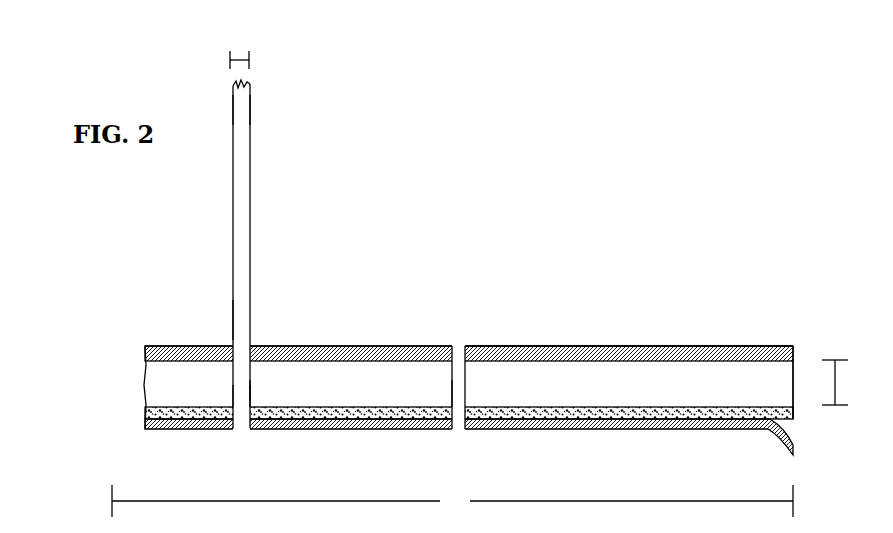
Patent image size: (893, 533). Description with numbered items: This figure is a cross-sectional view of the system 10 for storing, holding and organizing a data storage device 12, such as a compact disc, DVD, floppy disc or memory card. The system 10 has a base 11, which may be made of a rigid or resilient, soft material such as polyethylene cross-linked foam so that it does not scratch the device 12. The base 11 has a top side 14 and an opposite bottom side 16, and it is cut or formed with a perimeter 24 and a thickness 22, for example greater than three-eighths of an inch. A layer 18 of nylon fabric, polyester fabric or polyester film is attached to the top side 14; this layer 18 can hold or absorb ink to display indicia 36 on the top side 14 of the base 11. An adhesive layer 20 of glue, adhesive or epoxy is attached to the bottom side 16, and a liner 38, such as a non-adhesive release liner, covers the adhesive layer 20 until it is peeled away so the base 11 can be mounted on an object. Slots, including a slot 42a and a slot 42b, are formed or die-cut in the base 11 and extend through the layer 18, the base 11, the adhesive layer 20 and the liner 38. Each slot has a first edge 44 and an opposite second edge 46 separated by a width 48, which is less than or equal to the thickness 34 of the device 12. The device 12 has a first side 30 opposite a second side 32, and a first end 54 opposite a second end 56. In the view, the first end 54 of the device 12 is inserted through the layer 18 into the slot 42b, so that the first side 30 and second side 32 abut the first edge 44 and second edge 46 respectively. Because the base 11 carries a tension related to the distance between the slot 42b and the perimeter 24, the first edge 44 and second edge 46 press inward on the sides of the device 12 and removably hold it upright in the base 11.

The system 10 is at (560, 280).
The base 11 is at (143, 383).
The data storage device 12 is at (240, 153).
The top side 14 is at (712, 360).
The bottom side 16 is at (783, 407).
The layer 18 is at (497, 350).
The adhesive layer 20 is at (145, 417).
The thickness 22 is at (845, 382).
The perimeter 24 is at (797, 367).
The first side 30 is at (229, 107).
The second side 32 is at (252, 107).
The thickness 34 is at (239, 49).
The indicia 36 is at (452, 501).
The liner 38 is at (588, 428).
The slot 42a is at (458, 345).
The slot 42b is at (243, 433).
The first edge 44 is at (448, 383).
The second edge 46 is at (258, 392).
The width 48 is at (238, 322).
The first end 54 is at (245, 396).
The second end 56 is at (240, 185).